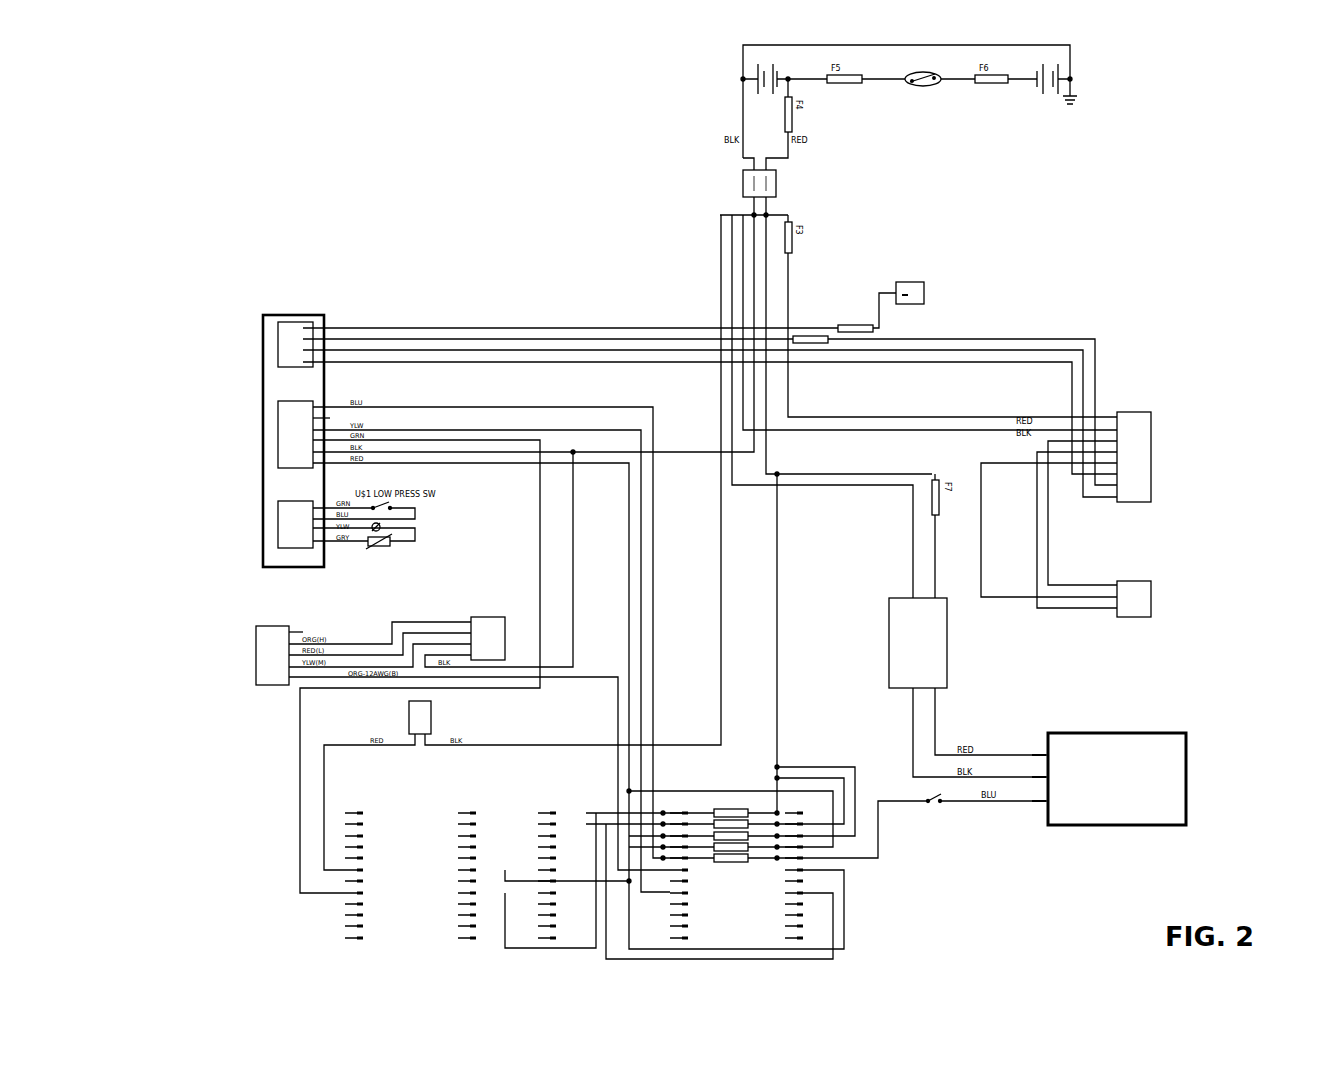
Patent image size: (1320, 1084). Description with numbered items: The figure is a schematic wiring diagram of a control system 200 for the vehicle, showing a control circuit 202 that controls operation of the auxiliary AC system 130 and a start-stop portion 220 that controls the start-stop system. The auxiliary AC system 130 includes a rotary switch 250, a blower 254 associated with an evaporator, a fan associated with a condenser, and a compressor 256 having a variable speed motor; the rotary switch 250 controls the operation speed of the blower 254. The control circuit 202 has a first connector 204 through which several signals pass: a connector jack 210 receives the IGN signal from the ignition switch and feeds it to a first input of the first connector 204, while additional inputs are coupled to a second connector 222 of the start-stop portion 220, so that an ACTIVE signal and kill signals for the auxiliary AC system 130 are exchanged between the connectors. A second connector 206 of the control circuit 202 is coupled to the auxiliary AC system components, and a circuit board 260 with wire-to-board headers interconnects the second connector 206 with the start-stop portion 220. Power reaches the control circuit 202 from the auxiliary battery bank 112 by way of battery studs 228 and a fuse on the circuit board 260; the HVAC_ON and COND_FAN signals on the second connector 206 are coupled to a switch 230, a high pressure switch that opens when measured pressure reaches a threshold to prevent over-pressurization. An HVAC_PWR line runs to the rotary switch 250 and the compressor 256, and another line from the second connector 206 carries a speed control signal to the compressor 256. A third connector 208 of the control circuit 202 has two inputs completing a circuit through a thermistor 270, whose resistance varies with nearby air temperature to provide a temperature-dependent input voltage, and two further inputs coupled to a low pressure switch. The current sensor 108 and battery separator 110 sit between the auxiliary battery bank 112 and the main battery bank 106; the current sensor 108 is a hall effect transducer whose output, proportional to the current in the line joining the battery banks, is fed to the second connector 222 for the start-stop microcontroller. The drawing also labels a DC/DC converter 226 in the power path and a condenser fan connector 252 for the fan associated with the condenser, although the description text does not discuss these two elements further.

The main battery bank 106 is at (1066, 67).
The current sensor 108 is at (1151, 610).
The battery separator 110 is at (922, 88).
The auxiliary battery bank 112 is at (750, 105).
The auxiliary AC system 130 is at (208, 642).
The control system 200 is at (231, 430).
The control circuit 202 is at (263, 453).
The first connector 204 is at (278, 352).
The second connector 206 is at (278, 408).
The third connector 208 is at (278, 526).
The connector jack 210 is at (930, 296).
The start-stop portion 220 is at (1130, 313).
The second connector of start-stop portion 222 is at (1151, 480).
The DC/DC converter 226 is at (889, 650).
The battery studs 228 is at (776, 191).
The high pressure switch 230 is at (937, 812).
The rotary switch 250 is at (247, 620).
The condenser fan connector X13 252 is at (417, 746).
The blower 254 is at (505, 634).
The compressor 256 is at (1186, 783).
The circuit board 260 is at (870, 920).
The thermistor 270 is at (382, 552).